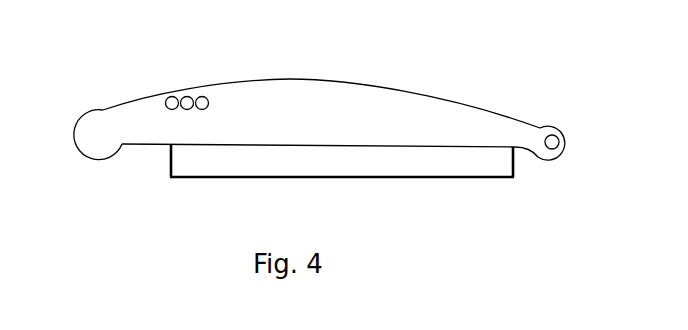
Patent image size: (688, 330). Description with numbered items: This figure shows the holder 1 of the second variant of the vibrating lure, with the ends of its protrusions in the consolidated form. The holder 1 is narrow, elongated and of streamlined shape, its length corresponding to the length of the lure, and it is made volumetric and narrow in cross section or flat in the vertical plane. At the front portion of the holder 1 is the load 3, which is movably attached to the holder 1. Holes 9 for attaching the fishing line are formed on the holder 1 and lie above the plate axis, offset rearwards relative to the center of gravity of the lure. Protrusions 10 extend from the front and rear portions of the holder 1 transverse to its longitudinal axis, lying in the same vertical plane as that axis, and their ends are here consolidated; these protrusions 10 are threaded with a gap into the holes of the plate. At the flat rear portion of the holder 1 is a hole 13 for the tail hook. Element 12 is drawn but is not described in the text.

The holder 1 is at (238, 100).
The load 3 is at (98, 125).
The hole for the fishing line 9 is at (188, 97).
The protrusions 10 is at (168, 173).
The bottom bar 12 is at (265, 178).
The hole for the tail hook 13 is at (555, 128).